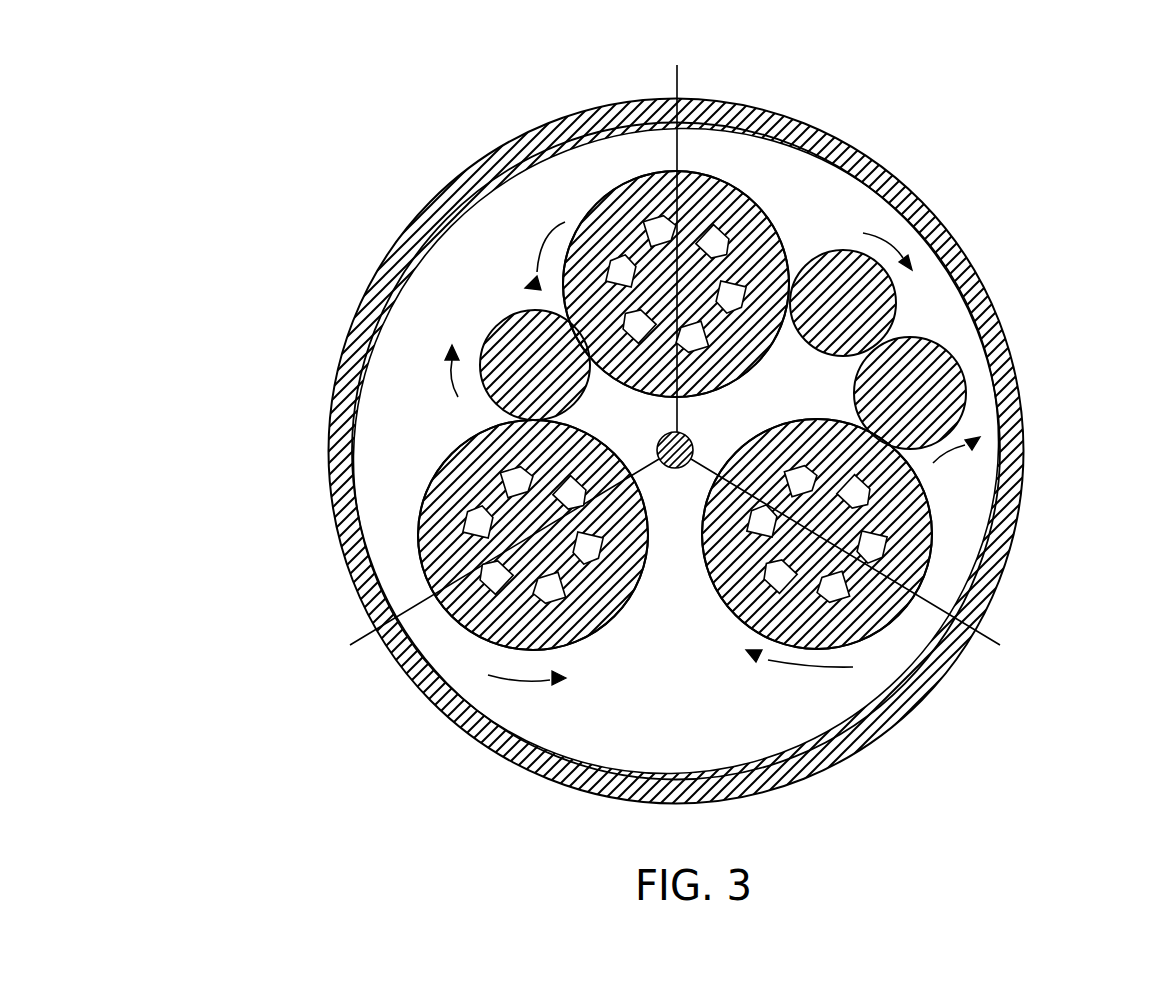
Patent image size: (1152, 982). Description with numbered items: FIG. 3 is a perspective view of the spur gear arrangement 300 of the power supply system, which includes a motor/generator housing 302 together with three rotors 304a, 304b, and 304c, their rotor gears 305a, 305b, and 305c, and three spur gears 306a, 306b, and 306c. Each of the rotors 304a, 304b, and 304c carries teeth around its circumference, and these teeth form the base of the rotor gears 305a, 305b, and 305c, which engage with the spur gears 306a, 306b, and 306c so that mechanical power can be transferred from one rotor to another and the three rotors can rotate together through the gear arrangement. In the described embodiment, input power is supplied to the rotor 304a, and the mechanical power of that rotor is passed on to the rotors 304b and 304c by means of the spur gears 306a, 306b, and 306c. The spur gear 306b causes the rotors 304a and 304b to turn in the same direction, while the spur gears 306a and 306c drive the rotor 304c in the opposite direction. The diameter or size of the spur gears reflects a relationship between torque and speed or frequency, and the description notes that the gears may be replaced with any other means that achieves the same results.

The spur gear arrangement 300 is at (253, 703).
The motor/generator housing 302 is at (755, 113).
The rotor 304a is at (600, 227).
The rotor 304b is at (437, 480).
The rotor 304c is at (928, 528).
The rotor gear 305a is at (633, 178).
The rotor gear 305b is at (453, 450).
The rotor gear 305c is at (903, 608).
The spur gear 306a is at (800, 262).
The spur gear 306b is at (492, 325).
The spur gear 306c is at (930, 335).